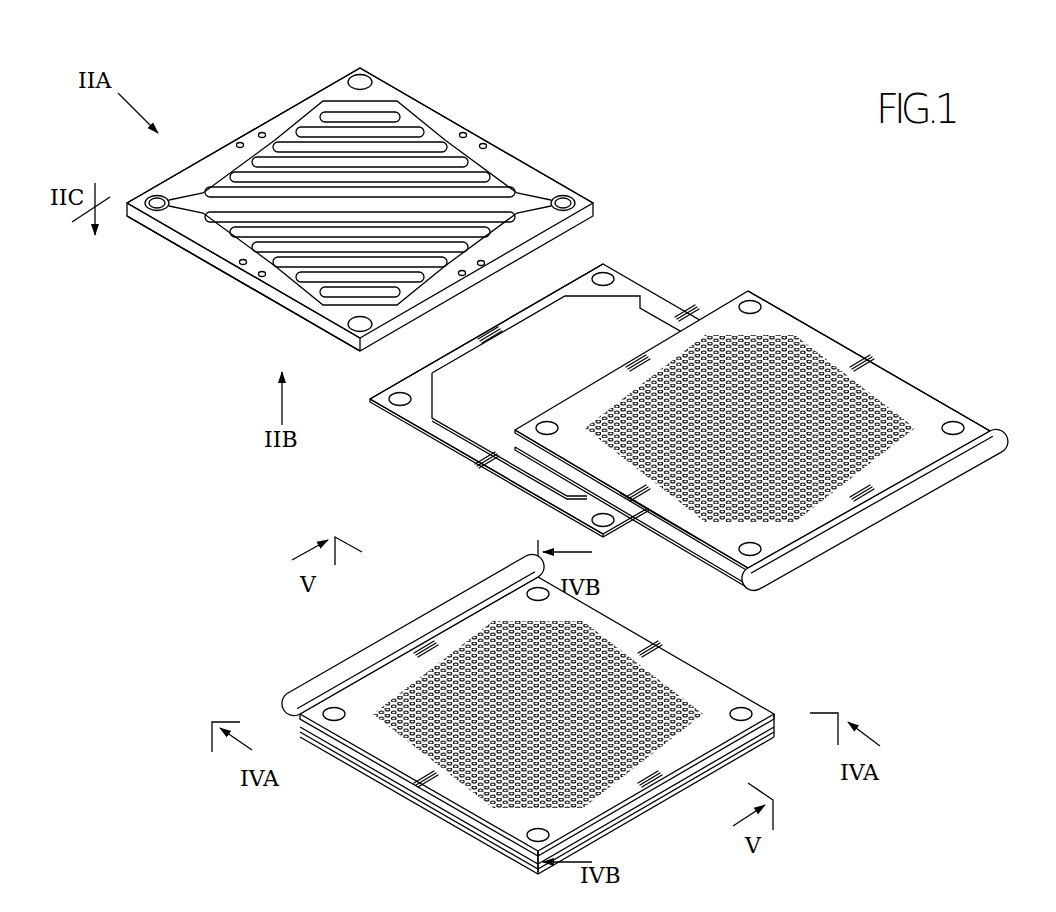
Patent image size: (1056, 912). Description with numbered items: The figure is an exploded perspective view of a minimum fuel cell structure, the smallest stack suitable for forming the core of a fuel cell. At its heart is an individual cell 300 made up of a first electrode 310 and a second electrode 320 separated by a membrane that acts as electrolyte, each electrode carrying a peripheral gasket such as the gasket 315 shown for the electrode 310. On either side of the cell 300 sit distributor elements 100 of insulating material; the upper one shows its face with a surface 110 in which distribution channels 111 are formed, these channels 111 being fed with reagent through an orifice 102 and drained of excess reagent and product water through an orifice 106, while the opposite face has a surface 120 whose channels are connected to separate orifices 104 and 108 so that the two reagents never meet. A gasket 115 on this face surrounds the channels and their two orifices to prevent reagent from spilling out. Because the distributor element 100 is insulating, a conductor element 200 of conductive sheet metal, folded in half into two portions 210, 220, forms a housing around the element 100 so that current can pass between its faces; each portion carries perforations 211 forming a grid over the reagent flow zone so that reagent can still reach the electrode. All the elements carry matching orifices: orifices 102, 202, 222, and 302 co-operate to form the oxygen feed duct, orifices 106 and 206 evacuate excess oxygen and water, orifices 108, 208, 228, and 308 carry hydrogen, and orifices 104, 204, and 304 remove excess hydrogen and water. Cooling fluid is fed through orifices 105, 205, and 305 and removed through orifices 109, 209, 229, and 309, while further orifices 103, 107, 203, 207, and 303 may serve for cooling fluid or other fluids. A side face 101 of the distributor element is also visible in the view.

The distributor element 100 is at (490, 465).
The side edge of plate 101 is at (190, 250).
The orifice 102 is at (157, 196).
The orifice 103 is at (262, 132).
The orifice 104 is at (368, 81).
The orifice 105 is at (484, 144).
The orifice 106 is at (574, 200).
The orifice 107 is at (481, 266).
The orifice 108 is at (356, 331).
The orifice 109 is at (262, 277).
The surface 110 is at (418, 103).
The distribution channels 111 is at (337, 108).
The gasket 115 is at (233, 157).
The surface 120 is at (300, 328).
The conductor element 200 is at (660, 551).
The orifice 202 is at (552, 424).
The orifice 203 is at (644, 360).
The orifice 204 is at (752, 300).
The orifice 205 is at (870, 362).
The orifice 206 is at (963, 427).
The orifice 207 is at (880, 493).
The orifice 208 is at (762, 548).
The orifice 209 is at (615, 500).
The portion 210 is at (818, 330).
The perforations 211 is at (770, 338).
The portion 220 is at (722, 575).
The orifice 222 is at (525, 470).
The orifice 228 is at (758, 600).
The orifice 229 is at (640, 520).
The individual cell 300 is at (577, 355).
The orifice 302 is at (377, 399).
The orifice 303 is at (494, 330).
The orifice 304 is at (610, 275).
The orifice 305 is at (690, 312).
The orifice 308 is at (595, 522).
The orifice 309 is at (485, 463).
The first electrode 310 is at (640, 305).
The gasket 315 is at (450, 460).
The second electrode 320 is at (425, 440).